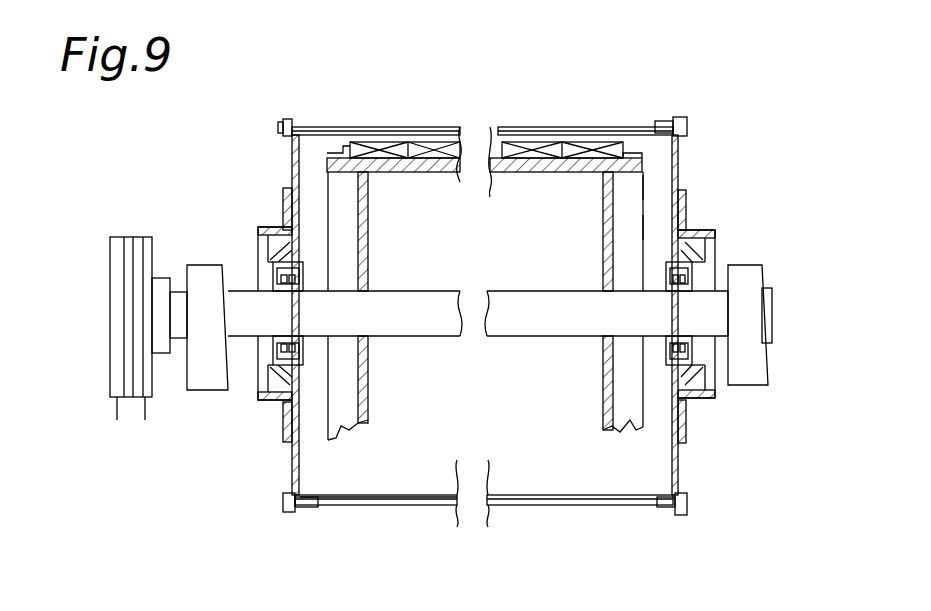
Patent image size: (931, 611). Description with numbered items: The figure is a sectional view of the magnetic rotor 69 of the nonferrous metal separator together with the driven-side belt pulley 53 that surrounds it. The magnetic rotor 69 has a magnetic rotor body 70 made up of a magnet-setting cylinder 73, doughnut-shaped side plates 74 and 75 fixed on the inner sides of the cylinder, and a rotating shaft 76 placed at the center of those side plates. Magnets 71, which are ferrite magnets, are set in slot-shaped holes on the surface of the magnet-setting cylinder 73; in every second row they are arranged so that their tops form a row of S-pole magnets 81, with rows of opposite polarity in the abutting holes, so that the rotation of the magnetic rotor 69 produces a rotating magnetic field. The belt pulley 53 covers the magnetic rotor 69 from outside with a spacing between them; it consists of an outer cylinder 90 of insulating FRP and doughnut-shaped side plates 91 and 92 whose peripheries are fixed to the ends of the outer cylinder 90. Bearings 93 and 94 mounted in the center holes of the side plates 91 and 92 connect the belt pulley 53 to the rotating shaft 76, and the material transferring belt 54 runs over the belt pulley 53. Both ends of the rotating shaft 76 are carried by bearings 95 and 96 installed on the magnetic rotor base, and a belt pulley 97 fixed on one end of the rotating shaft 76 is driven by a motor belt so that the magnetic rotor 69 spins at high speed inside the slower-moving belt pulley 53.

The driven-side belt pulley 53 is at (267, 151).
The material transferring belt 54 is at (447, 506).
The magnetic rotor 69 is at (653, 188).
The magnetic rotor body 70 is at (630, 226).
The magnet 71 is at (388, 157).
The magnet-setting cylinder 73 is at (426, 173).
The doughnut-shaped side plate 74 is at (370, 388).
The doughnut-shaped side plate 75 is at (608, 413).
The rotating shaft 76 is at (520, 322).
The row of S-pole magnets 81 is at (449, 150).
The outer cylinder 90 is at (365, 495).
The doughnut-shaped side plate 91 is at (292, 455).
The doughnut-shaped side plate 92 is at (678, 468).
The bearing 93 is at (285, 268).
The bearing 94 is at (683, 375).
The bearing 95 is at (208, 277).
The bearing 96 is at (743, 272).
The belt pulley 97 is at (110, 283).